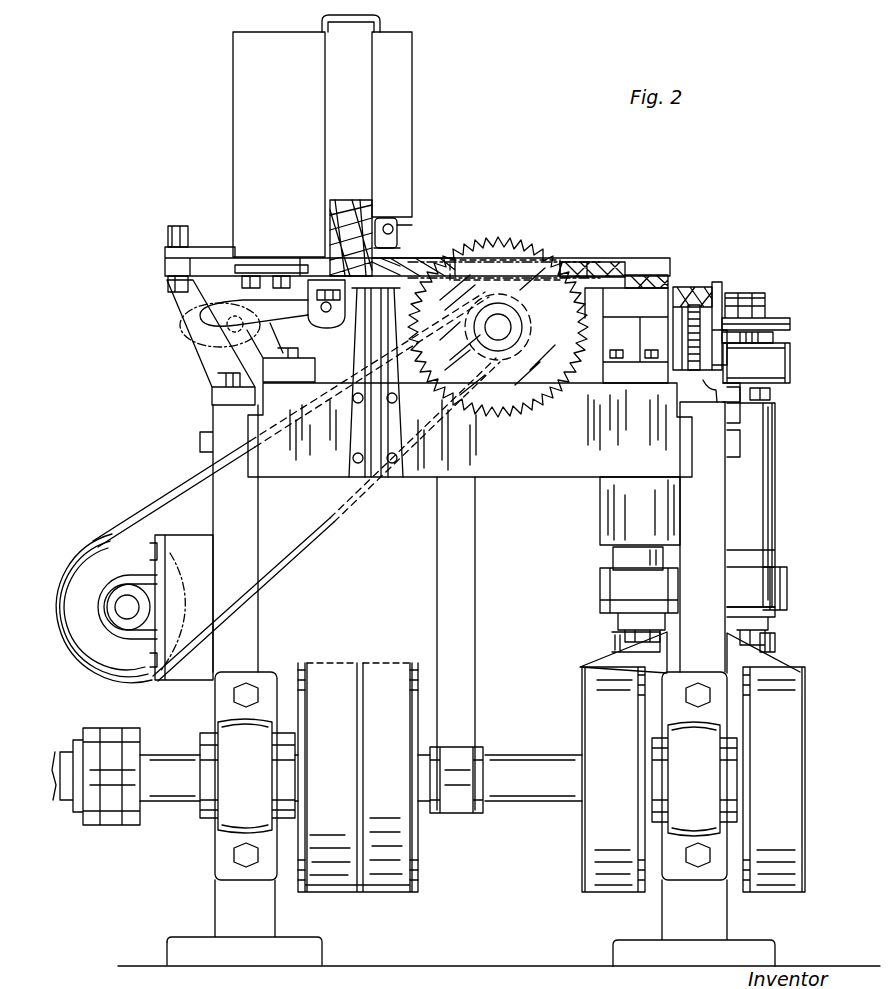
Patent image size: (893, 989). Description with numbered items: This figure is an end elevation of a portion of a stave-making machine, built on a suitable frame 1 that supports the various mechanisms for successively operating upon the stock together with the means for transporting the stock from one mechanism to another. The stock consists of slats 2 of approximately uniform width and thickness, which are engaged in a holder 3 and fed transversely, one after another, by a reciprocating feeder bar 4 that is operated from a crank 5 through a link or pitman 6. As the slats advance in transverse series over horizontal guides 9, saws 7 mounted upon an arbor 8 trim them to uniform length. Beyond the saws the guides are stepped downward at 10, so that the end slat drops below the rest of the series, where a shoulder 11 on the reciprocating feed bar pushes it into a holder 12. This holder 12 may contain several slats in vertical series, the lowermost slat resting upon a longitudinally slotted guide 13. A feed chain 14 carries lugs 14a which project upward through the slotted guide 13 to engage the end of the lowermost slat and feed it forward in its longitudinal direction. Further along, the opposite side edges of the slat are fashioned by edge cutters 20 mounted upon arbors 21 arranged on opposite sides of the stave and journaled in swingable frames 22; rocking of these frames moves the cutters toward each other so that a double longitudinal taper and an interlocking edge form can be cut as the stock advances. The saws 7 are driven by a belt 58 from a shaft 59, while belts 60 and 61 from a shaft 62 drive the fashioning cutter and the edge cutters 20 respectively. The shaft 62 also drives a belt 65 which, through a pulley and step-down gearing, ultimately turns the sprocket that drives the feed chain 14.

The frame 1 is at (215, 415).
The slats 2 is at (332, 213).
The holder 3 is at (402, 122).
The reciprocating feeder bar 4 is at (265, 275).
The crank 5 is at (186, 335).
The link or pitman 6 is at (304, 309).
The saws 7 is at (518, 268).
The arbor 8 is at (505, 329).
The horizontal guides 9 is at (600, 263).
The downward step of guides 10 is at (640, 300).
The shoulder 11 is at (642, 278).
The holder 12 is at (720, 290).
The longitudinally slotted guide 13 is at (682, 292).
The feed chain 14 is at (730, 368).
The lugs 14a is at (702, 302).
The edge cutters 20 is at (788, 324).
The arbors 21 is at (775, 488).
The swingable frames 22 is at (776, 568).
The belt 58 is at (172, 492).
The shaft 59 is at (122, 600).
The belt 60 is at (400, 845).
The belt 61 is at (610, 893).
The shaft 62 is at (188, 802).
The belt 65 is at (474, 681).